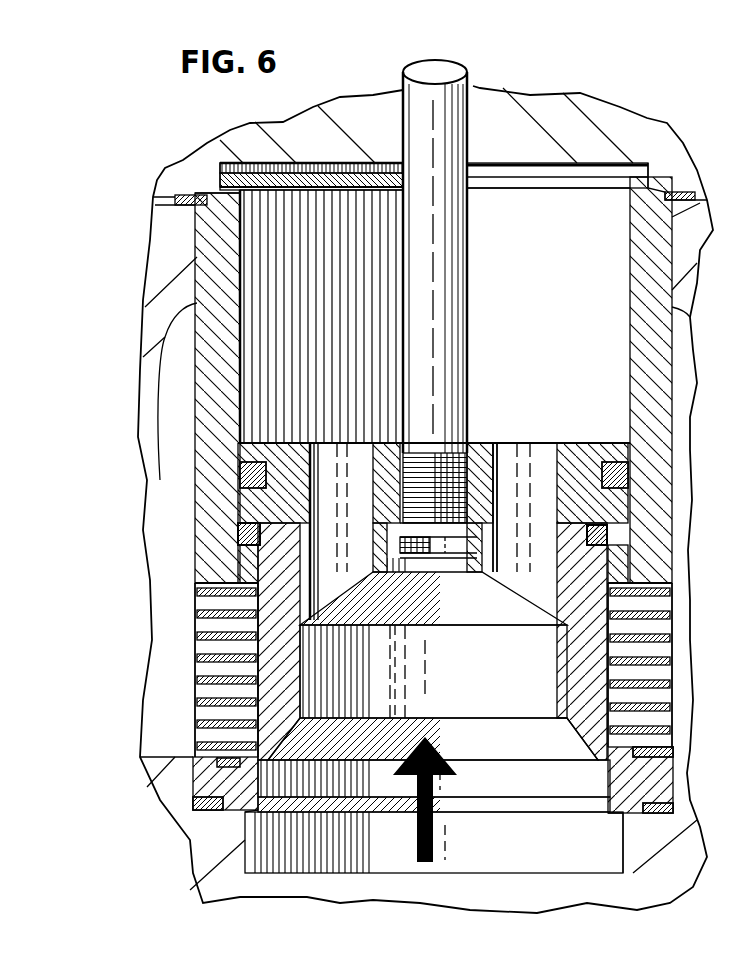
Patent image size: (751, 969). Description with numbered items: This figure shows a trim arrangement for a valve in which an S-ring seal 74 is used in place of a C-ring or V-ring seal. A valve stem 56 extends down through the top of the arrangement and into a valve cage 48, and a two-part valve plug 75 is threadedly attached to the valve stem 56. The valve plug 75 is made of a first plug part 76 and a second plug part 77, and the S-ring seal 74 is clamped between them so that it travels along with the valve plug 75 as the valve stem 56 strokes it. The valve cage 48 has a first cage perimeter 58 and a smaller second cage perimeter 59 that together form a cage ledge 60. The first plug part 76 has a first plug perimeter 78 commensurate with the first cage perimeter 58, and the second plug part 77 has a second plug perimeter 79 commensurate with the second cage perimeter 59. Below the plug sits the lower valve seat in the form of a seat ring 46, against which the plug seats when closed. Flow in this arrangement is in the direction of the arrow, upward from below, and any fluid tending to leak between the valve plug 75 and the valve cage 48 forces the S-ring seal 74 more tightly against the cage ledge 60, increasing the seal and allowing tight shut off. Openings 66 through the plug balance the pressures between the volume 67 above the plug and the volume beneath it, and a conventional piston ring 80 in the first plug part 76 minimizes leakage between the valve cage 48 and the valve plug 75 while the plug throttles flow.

The valve stem 56 is at (474, 82).
The first cage perimeter 58 is at (243, 337).
The volume 67 is at (560, 236).
The first plug part 76 is at (358, 493).
The openings 66 is at (520, 462).
The valve cage 48 is at (650, 395).
The first plug perimeter 78 is at (240, 466).
The piston ring 80 is at (248, 530).
The S-ring seal 74 is at (262, 553).
The second plug perimeter 79 is at (252, 567).
The cage ledge 60 is at (270, 553).
The second plug part 77 is at (290, 598).
The valve plug 75 is at (588, 718).
The seat ring 46 is at (636, 781).
The second cage perimeter 59 is at (312, 518).